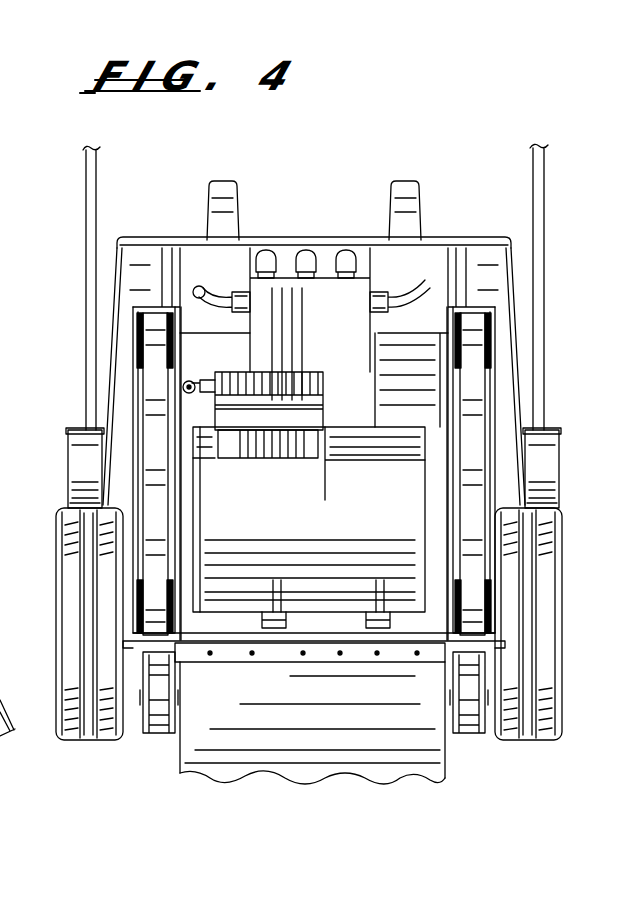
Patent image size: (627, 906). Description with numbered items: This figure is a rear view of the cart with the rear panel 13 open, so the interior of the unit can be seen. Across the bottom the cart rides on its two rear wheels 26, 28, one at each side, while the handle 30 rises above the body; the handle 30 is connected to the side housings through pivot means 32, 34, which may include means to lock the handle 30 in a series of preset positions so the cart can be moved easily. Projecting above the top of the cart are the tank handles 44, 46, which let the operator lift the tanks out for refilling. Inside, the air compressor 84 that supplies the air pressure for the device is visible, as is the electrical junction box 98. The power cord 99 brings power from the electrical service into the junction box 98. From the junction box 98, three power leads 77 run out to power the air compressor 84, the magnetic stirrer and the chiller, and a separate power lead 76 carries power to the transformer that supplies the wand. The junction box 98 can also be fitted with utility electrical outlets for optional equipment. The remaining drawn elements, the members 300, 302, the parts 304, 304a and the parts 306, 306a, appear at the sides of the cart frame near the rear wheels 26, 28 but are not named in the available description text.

The rear panel 13 is at (264, 696).
The rear wheel 26 is at (562, 568).
The rear wheel 28 is at (56, 547).
The handle 30 is at (545, 238).
The pivot means 32 is at (559, 475).
The pivot means 34 is at (72, 462).
The tank handle 44 is at (405, 186).
The tank handle 46 is at (233, 195).
The power lead 76 is at (405, 300).
The power leads 77 is at (340, 252).
The air compressor 84 is at (260, 532).
The electrical junction box 98 is at (346, 336).
The power cord 99 is at (207, 300).
The right roller channel 300 is at (463, 413).
The left roller channel 302 is at (152, 385).
The right upper roller bracket 304 is at (486, 342).
The left upper roller bracket 304a is at (138, 342).
The right lower roller bracket 306 is at (482, 618).
The left lower roller bracket 306a is at (140, 610).